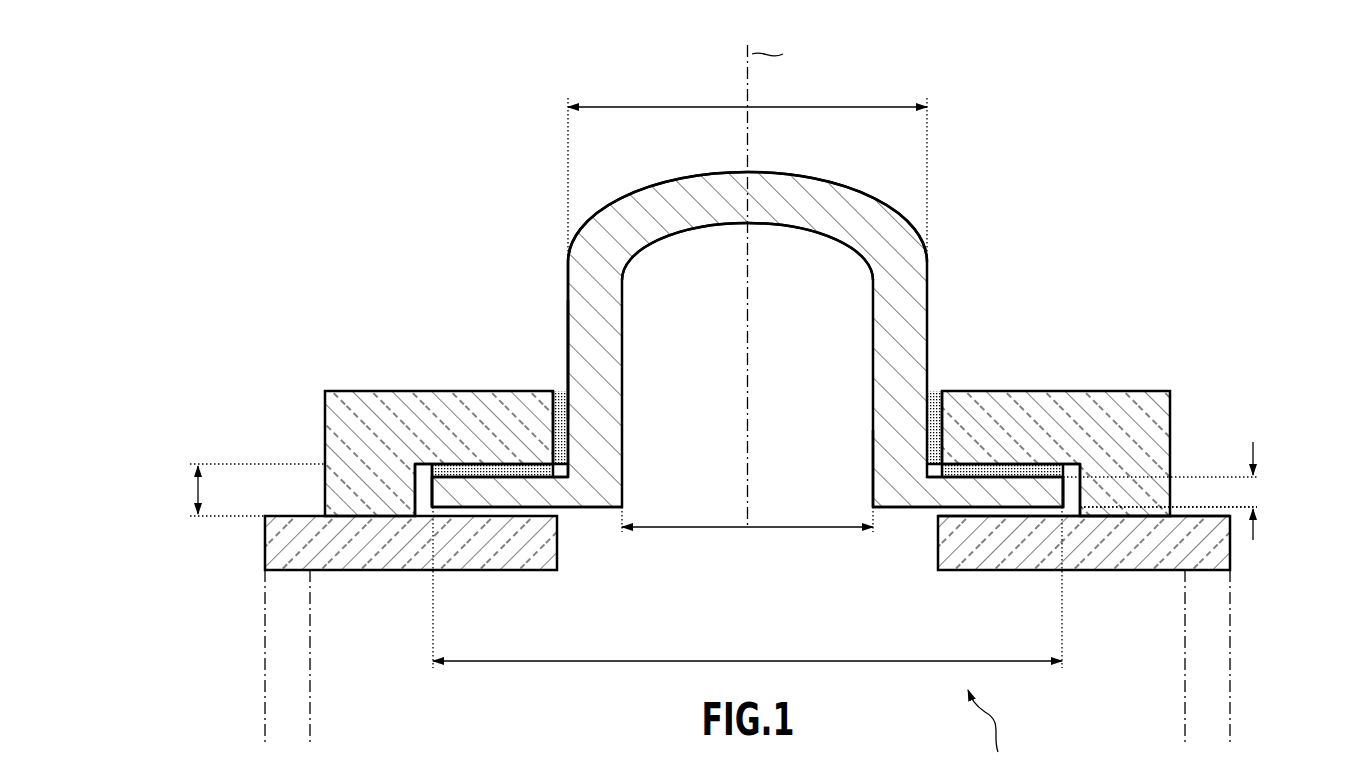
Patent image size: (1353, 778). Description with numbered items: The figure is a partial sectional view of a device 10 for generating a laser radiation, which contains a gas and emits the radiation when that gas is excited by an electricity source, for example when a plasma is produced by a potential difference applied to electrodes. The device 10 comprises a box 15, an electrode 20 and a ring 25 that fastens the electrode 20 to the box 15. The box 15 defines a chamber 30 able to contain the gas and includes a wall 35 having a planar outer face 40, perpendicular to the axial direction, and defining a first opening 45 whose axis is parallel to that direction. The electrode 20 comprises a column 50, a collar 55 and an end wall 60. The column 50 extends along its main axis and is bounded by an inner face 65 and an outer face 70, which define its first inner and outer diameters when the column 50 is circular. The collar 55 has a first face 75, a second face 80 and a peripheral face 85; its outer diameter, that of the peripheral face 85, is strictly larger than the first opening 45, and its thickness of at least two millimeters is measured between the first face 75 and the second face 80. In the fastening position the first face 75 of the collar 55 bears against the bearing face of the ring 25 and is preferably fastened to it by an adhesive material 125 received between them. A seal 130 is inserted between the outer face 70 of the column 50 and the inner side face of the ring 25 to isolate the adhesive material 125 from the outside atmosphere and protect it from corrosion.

The device for generating a laser radiation 10 is at (731, 408).
The box 15 is at (380, 546).
The electrode 20 is at (771, 384).
The ring 25 is at (354, 390).
The chamber 30 is at (1086, 589).
The wall 35 is at (1228, 542).
The outer face 40 is at (1205, 503).
The first opening 45 is at (908, 540).
The column 50 is at (590, 312).
The collar 55 is at (1010, 498).
The end wall 60 is at (812, 185).
The inner face 65 is at (629, 325).
The outer face 70 is at (566, 354).
The first face 75 is at (462, 463).
The second face 80 is at (484, 518).
The peripheral face 85 is at (427, 487).
The adhesive material 125 is at (1017, 468).
The seal 130 is at (940, 390).